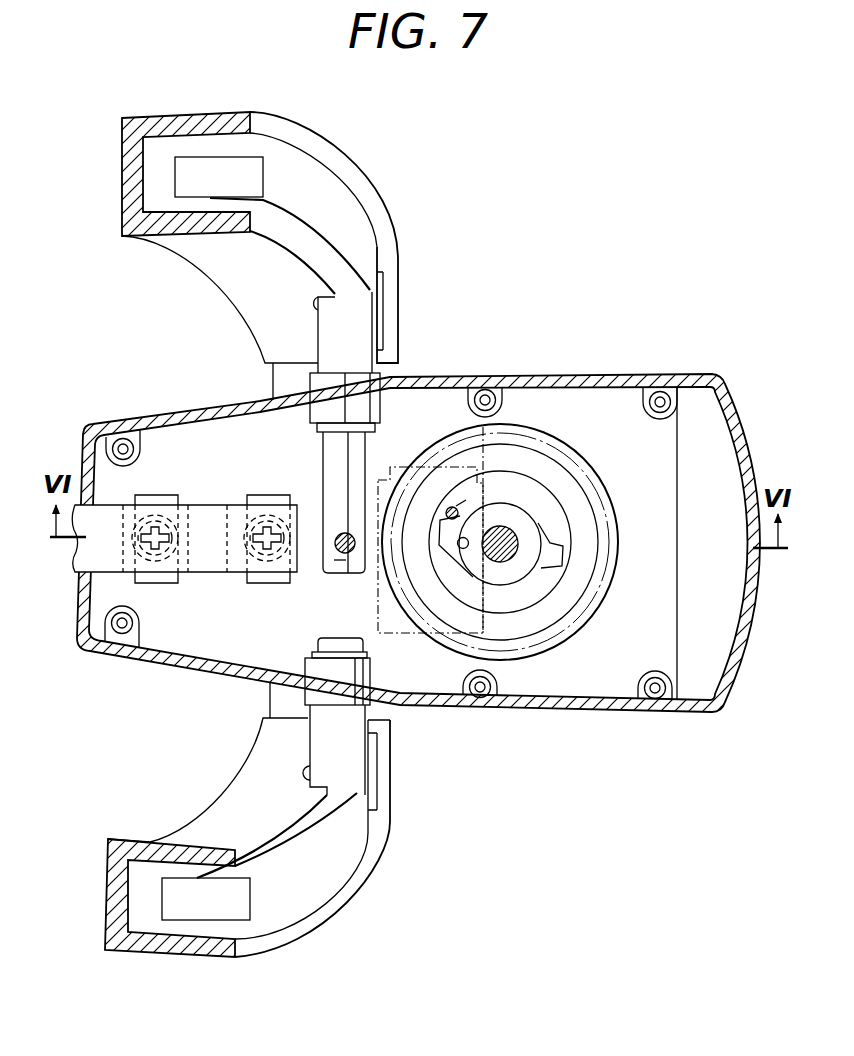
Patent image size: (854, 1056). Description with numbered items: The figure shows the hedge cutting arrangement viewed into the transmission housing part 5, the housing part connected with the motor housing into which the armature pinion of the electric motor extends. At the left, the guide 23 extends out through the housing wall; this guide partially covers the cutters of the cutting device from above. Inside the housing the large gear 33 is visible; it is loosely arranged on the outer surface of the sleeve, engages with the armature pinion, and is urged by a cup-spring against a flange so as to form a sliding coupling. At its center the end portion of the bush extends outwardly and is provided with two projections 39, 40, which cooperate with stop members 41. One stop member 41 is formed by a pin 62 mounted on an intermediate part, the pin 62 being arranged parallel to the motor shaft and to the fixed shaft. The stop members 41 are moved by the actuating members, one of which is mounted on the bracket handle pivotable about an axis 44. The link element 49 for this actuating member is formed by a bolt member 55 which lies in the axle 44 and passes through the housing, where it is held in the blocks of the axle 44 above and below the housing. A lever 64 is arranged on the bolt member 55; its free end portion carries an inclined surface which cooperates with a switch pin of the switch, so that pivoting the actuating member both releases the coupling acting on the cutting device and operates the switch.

The transmission housing part 5 is at (730, 410).
The guide 23 is at (99, 517).
The gear 33 is at (553, 650).
The projection 39 is at (448, 540).
The projection 40 is at (550, 542).
The stop member 41 is at (461, 503).
The axis 44 is at (378, 411).
The link element 49 is at (340, 563).
The bolt member 55 is at (330, 455).
The pin 62 is at (453, 507).
The lever 64 is at (337, 554).